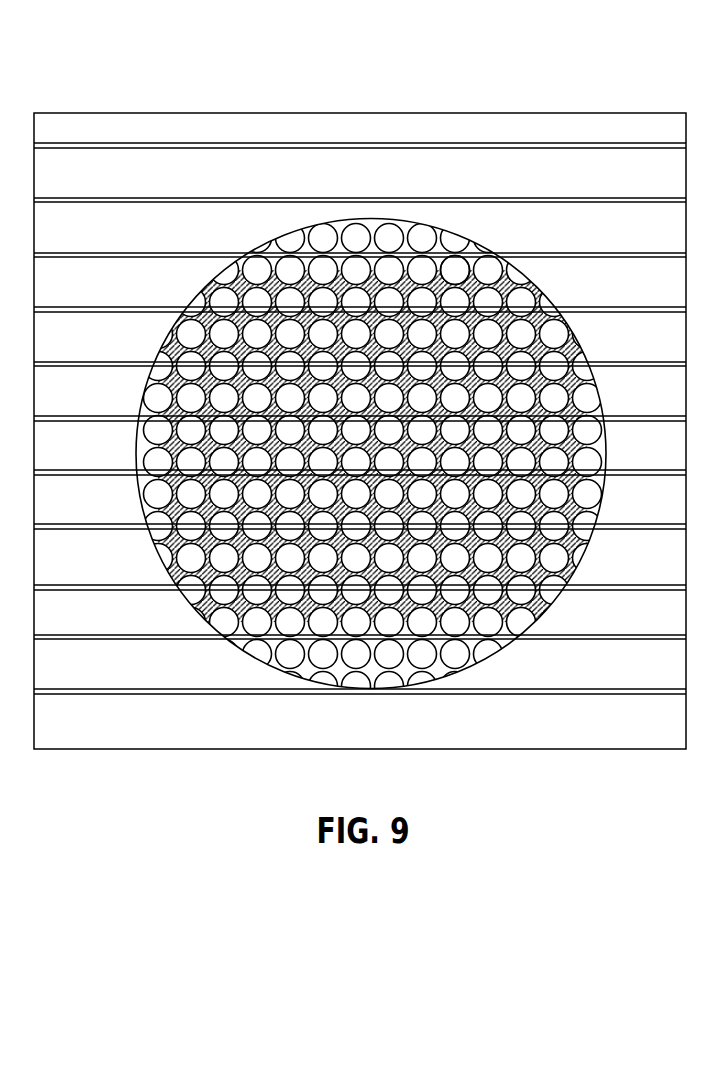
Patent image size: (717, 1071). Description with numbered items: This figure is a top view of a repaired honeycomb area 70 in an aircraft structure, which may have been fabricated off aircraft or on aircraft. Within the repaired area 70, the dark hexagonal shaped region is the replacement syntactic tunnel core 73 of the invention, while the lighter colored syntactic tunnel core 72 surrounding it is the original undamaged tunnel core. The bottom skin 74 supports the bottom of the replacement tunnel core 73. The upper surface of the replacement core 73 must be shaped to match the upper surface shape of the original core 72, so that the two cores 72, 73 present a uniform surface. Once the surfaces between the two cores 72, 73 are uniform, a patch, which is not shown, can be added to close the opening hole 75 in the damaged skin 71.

The repaired honeycomb area 70 is at (622, 58).
The damaged skin 71 is at (224, 134).
The original undamaged tunnel core 72 is at (312, 247).
The replacement syntactic tunnel core 73 is at (375, 280).
The bottom skin 74 is at (453, 270).
The opening hole 75 is at (500, 645).